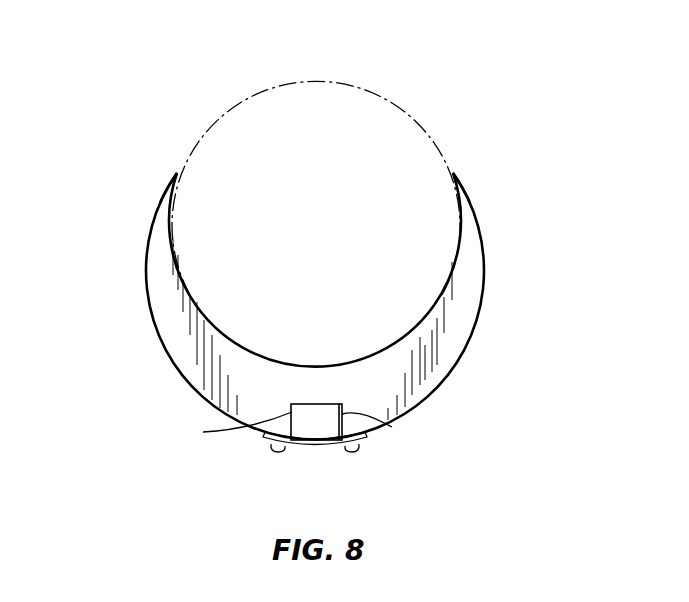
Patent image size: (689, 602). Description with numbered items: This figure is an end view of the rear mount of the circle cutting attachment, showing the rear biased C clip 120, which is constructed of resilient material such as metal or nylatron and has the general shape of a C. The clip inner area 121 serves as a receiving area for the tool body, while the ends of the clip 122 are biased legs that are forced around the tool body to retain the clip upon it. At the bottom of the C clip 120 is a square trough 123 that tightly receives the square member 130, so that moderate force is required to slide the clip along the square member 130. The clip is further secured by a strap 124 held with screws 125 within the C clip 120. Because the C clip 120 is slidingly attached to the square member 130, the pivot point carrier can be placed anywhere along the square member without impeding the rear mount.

The rear biased C clip 120 is at (476, 325).
The clip inner area 121 is at (459, 242).
The ends of the clip 122 is at (158, 203).
The square trough 123 is at (275, 429).
The strap 124 is at (303, 447).
The screws 125 is at (278, 447).
The square member 130 is at (323, 422).